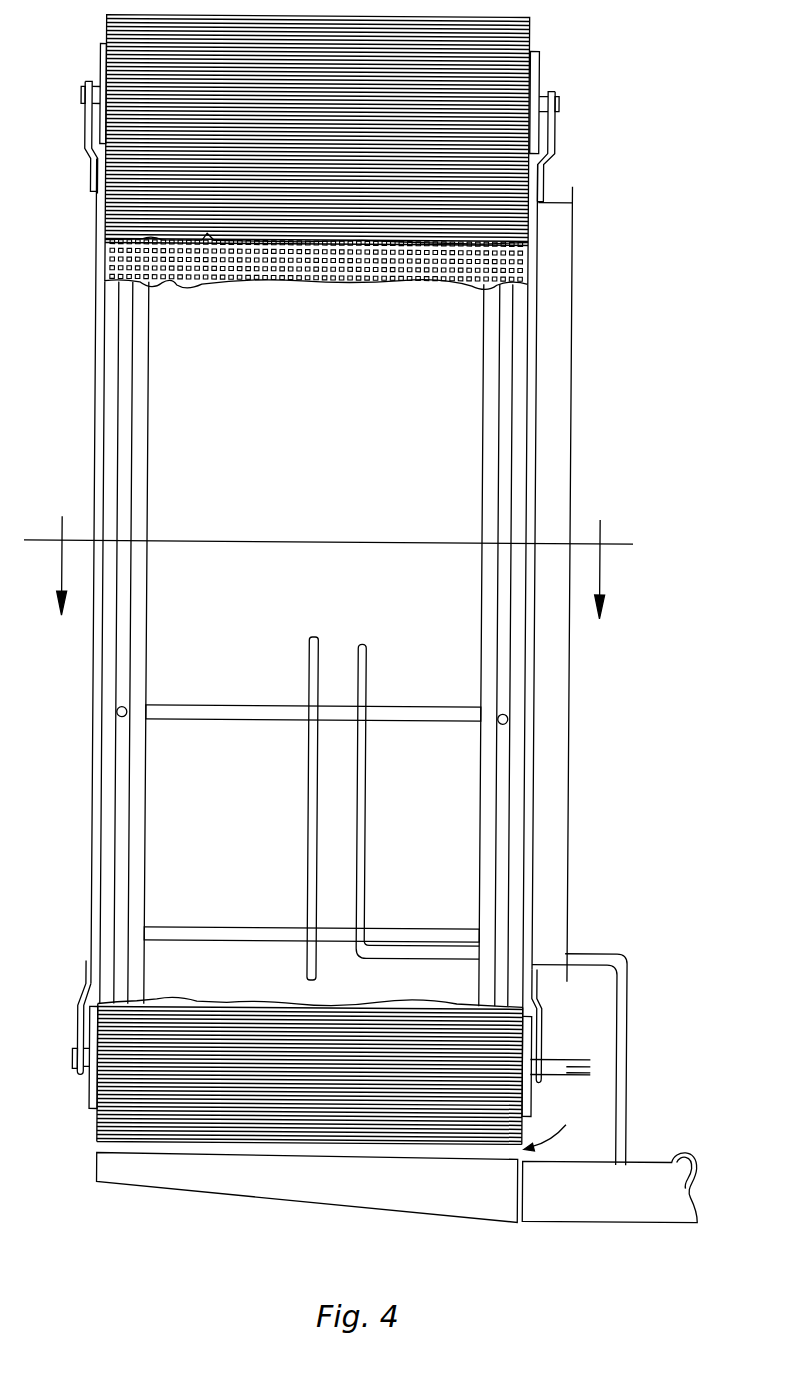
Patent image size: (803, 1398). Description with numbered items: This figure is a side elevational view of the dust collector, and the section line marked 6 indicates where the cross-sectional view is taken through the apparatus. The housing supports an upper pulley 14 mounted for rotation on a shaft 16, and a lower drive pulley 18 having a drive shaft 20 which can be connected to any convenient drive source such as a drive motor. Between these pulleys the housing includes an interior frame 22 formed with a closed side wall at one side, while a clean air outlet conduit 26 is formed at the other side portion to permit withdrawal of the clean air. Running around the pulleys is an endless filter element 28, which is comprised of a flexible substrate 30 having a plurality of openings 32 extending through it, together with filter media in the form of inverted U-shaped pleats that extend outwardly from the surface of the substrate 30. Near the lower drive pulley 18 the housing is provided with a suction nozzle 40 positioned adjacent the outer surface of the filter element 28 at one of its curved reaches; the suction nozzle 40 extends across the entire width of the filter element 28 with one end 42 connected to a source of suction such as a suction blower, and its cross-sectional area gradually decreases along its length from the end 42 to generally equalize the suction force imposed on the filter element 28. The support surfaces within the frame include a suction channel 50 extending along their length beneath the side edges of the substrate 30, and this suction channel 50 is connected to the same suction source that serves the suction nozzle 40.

The upper pulley 14 is at (532, 77).
The shaft 16 is at (552, 105).
The openings 32 is at (521, 268).
The flexible substrate 30 is at (500, 287).
The clean air outlet conduit 26 is at (559, 372).
The interior frame 22 is at (530, 470).
The suction channel 50 is at (503, 829).
The lower drive pulley 18 is at (525, 1038).
The drive shaft 20 is at (570, 1058).
The filter element 28 is at (555, 1126).
The suction nozzle 40 is at (483, 1206).
The end 42 is at (583, 1205).
The section line 6- 6 is at (328, 556).